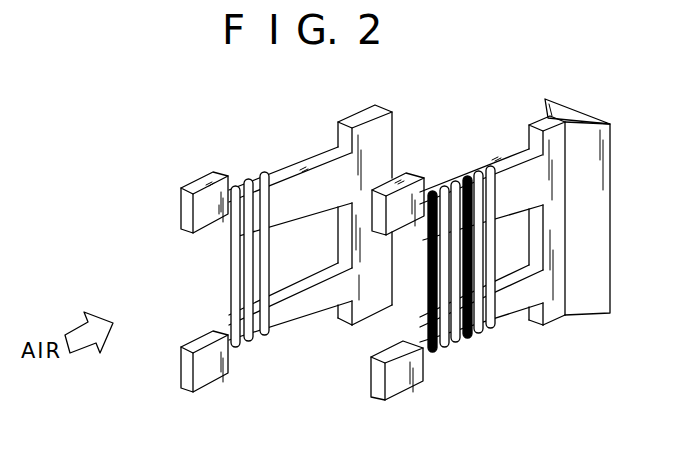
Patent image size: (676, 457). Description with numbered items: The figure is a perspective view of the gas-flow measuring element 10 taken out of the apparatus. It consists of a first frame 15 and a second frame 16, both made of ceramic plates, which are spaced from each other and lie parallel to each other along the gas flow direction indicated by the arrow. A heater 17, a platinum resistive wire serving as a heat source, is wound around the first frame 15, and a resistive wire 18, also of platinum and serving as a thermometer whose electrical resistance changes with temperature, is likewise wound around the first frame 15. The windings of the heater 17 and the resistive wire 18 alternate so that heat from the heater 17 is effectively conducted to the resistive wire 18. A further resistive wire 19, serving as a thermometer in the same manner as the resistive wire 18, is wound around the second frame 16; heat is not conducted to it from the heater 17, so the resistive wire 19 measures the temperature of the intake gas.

The gas-flow measuring element 10 is at (470, 101).
The first frame 15 is at (502, 167).
The second frame 16 is at (318, 158).
The heater 17 is at (423, 303).
The resistive wire 18 is at (495, 316).
The resistive wire 19 is at (228, 268).